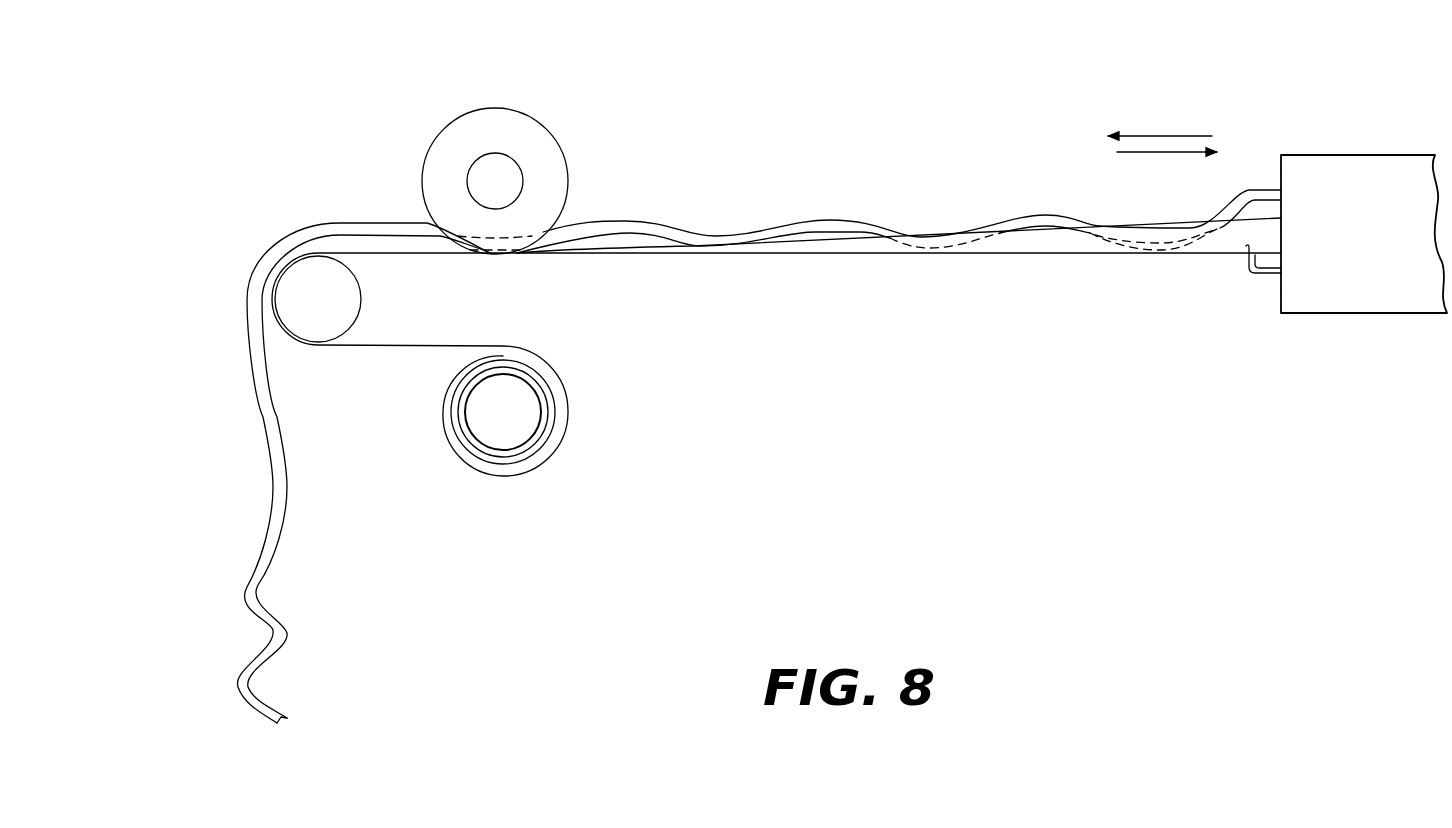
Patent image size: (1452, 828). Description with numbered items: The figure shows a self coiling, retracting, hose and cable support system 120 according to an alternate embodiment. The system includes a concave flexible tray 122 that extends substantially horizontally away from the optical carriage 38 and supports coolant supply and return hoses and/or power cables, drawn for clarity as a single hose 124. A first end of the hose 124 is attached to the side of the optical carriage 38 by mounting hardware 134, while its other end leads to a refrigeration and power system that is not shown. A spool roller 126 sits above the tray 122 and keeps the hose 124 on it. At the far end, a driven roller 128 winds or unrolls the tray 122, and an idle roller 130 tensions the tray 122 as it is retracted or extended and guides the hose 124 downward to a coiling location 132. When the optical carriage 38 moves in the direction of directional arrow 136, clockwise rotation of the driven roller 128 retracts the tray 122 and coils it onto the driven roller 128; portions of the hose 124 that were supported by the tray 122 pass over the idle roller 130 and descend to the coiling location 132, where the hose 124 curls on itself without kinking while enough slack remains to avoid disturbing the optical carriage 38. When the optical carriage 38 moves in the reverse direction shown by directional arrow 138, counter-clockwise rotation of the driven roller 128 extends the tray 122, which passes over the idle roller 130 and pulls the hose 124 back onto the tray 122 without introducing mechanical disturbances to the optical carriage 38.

The self coiling, retracting, hose and cable support system 120 is at (278, 132).
The concave flexible tray 122 is at (1037, 245).
The hose 124 is at (817, 226).
The spool roller 126 is at (527, 140).
The driven roller 128 is at (512, 400).
The idle roller 130 is at (295, 300).
The coiling location 132 is at (240, 652).
The mounting hardware 134 is at (1265, 275).
The directional arrow 136 is at (1143, 136).
The directional arrow 138 is at (1143, 152).
The optical carriage 38 is at (1302, 168).